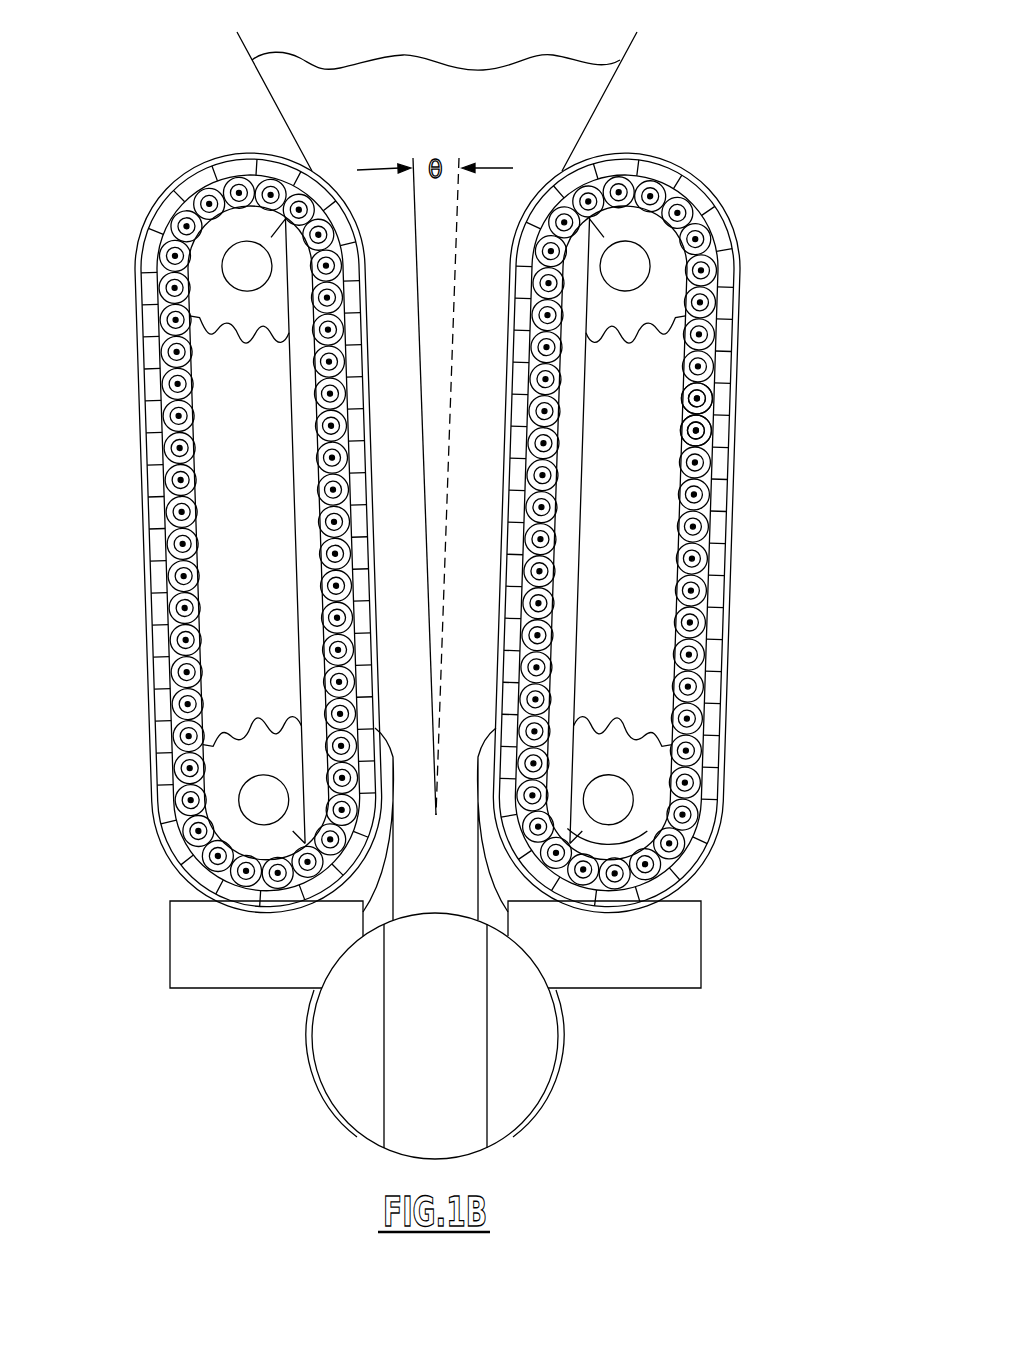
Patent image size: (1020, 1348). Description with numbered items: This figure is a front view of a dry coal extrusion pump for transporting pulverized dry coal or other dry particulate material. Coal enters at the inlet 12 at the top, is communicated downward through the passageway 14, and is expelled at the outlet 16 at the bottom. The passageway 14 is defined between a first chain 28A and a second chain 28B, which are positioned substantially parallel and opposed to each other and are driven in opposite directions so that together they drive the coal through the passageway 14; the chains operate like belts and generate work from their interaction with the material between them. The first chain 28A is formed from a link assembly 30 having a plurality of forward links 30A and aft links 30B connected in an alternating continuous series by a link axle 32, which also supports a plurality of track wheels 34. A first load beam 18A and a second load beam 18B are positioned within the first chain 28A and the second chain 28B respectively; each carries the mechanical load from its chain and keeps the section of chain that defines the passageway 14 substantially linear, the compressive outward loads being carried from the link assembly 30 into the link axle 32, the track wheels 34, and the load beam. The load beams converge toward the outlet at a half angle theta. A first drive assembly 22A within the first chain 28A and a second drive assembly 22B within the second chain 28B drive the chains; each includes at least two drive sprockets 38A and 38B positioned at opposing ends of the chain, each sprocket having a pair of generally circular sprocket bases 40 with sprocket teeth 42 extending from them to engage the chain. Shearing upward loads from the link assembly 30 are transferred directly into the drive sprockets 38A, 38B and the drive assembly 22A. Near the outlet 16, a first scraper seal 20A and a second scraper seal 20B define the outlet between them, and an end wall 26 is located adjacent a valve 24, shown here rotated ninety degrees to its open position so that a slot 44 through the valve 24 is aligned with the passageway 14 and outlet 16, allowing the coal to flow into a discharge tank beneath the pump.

The inlet 12 is at (492, 52).
The passageway 14 is at (452, 272).
The outlet 16 is at (464, 1053).
The first load beam 18A is at (572, 510).
The second load beam 18B is at (292, 475).
The first scraper seal 20A is at (497, 855).
The second scraper seal 20B is at (372, 851).
The first drive assembly 22A is at (673, 533).
The second drive assembly 22B is at (258, 533).
The valve 24 is at (537, 1068).
The end wall 26 is at (682, 946).
The first chain 28A is at (679, 532).
The second chain 28B is at (212, 532).
The link assembly 30 is at (760, 354).
The forward links 30A is at (738, 398).
The aft links 30B is at (738, 440).
The link axle 32 is at (690, 391).
The track wheels 34 is at (690, 407).
The drive sprocket 38A is at (640, 840).
The drive sprocket 38B is at (666, 260).
The sprocket bases 40 is at (637, 798).
The sprocket teeth 42 is at (655, 722).
The slot 44 is at (385, 1027).